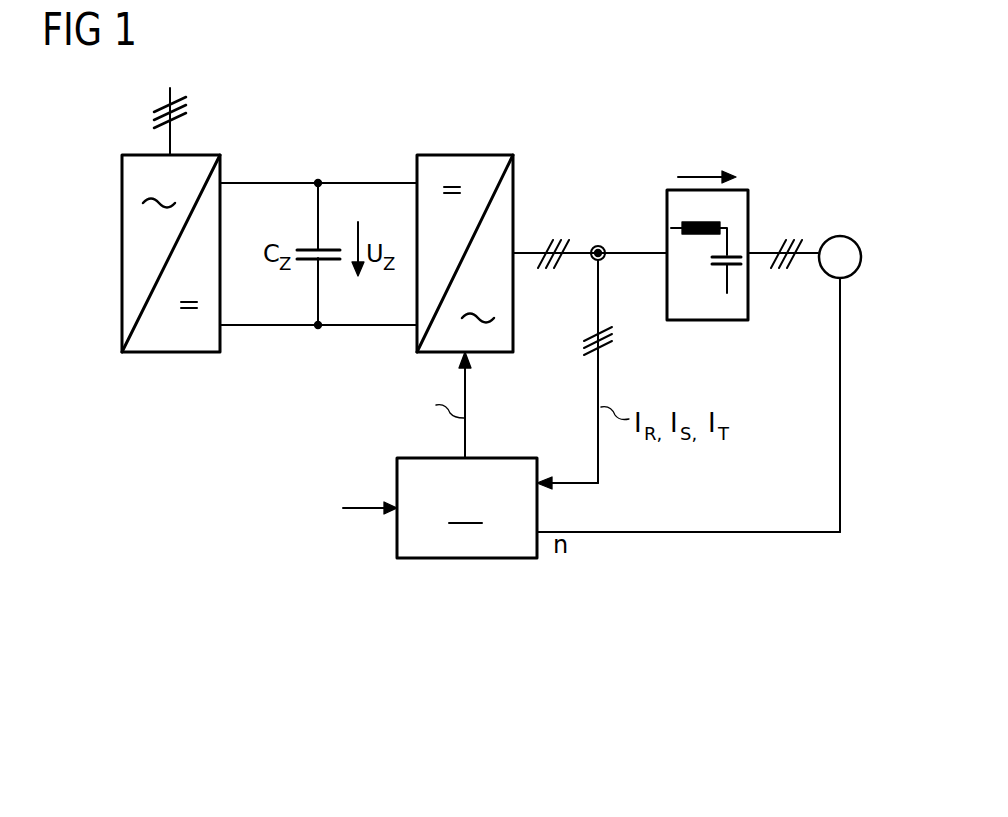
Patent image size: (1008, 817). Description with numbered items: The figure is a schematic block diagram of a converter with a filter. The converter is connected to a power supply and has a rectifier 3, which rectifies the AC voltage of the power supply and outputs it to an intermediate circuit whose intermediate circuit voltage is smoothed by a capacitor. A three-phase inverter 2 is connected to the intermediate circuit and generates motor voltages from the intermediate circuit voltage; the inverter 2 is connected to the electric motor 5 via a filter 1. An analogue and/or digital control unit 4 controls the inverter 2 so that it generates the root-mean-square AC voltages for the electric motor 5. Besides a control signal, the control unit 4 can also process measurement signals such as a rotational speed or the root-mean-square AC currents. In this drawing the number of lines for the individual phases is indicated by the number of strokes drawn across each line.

The filter 1 is at (669, 203).
The inverter 2 is at (453, 152).
The rectifier 3 is at (205, 153).
The controller 4 is at (515, 458).
The motor 5 is at (840, 235).